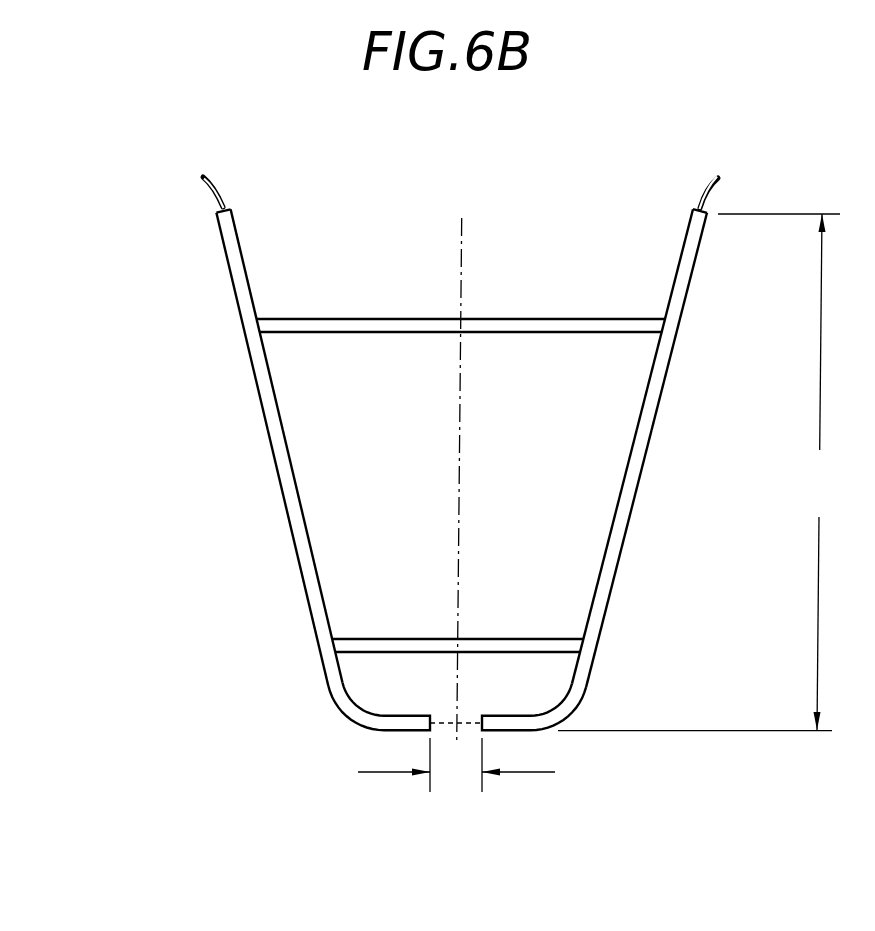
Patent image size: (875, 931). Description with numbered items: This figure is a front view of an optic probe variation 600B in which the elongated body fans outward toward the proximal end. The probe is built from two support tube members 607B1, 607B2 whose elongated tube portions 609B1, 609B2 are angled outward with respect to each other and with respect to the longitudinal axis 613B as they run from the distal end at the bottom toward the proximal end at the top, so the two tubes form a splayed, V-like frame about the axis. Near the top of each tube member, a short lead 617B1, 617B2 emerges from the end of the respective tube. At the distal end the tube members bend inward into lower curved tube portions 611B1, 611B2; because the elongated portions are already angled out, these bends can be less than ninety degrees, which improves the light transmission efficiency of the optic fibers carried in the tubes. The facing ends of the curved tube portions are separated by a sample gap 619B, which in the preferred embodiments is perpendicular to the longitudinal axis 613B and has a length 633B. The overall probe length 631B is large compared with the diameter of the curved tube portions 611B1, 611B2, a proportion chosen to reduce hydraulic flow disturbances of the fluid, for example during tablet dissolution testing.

The optic probe variation 600B is at (184, 246).
The first support tube member 607B1 is at (247, 348).
The second support tube member 607B2 is at (733, 367).
The first elongated tube portion 609B1 is at (295, 520).
The second elongated tube portion 609B2 is at (635, 487).
The first curved tube portion 611B1 is at (327, 680).
The second curved tube portion 611B2 is at (575, 703).
The longitudinal axis 613B is at (461, 271).
The first wire lead 617B1 is at (223, 190).
The second wire lead 617B2 is at (710, 186).
The sample gap 619B is at (462, 722).
The probe length 631B is at (704, 472).
The sample gap length 633B is at (460, 773).